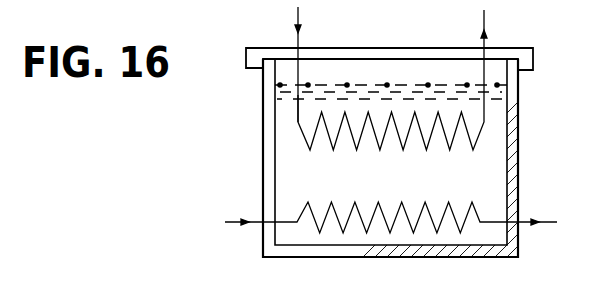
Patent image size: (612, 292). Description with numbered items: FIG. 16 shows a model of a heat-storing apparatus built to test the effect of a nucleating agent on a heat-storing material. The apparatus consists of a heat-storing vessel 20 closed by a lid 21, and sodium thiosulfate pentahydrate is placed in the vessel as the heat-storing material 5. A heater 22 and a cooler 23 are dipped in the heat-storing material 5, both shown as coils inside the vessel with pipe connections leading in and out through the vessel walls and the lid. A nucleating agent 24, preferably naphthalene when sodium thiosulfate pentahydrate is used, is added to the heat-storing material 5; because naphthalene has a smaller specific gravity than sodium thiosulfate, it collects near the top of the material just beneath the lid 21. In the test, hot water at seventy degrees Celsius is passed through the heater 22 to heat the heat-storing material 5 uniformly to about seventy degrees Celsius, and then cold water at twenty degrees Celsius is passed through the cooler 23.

The heat-storing material 5 is at (505, 123).
The heat-storing vessel 20 is at (507, 177).
The lid 21 is at (528, 57).
The heater 22 is at (298, 121).
The cooler 23 is at (367, 234).
The nucleating agent 24 is at (386, 83).